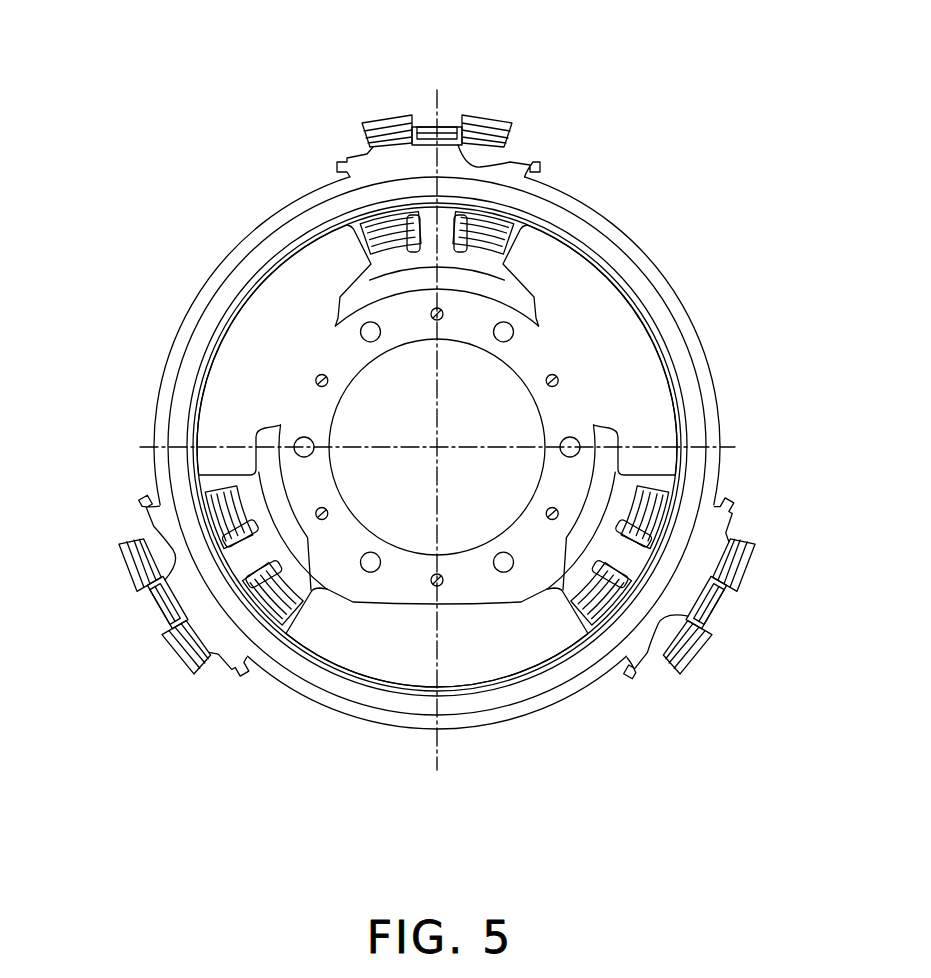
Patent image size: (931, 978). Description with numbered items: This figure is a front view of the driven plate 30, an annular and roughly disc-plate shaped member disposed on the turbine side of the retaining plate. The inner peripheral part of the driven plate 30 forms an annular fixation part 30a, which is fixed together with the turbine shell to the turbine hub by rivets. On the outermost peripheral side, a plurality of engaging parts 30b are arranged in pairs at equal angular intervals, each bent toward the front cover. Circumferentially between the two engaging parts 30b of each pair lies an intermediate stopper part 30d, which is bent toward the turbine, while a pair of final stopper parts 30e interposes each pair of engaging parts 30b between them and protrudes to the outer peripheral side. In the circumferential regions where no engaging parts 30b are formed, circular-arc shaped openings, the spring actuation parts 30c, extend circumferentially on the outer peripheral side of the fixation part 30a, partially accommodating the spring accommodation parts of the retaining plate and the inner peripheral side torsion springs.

The driven plate 30 is at (193, 257).
The fixation part 30a is at (545, 356).
The engaging parts 30b is at (485, 115).
The spring actuation parts 30c is at (320, 240).
The intermediate stopper parts 30d is at (445, 133).
The final stopper parts 30e is at (342, 166).